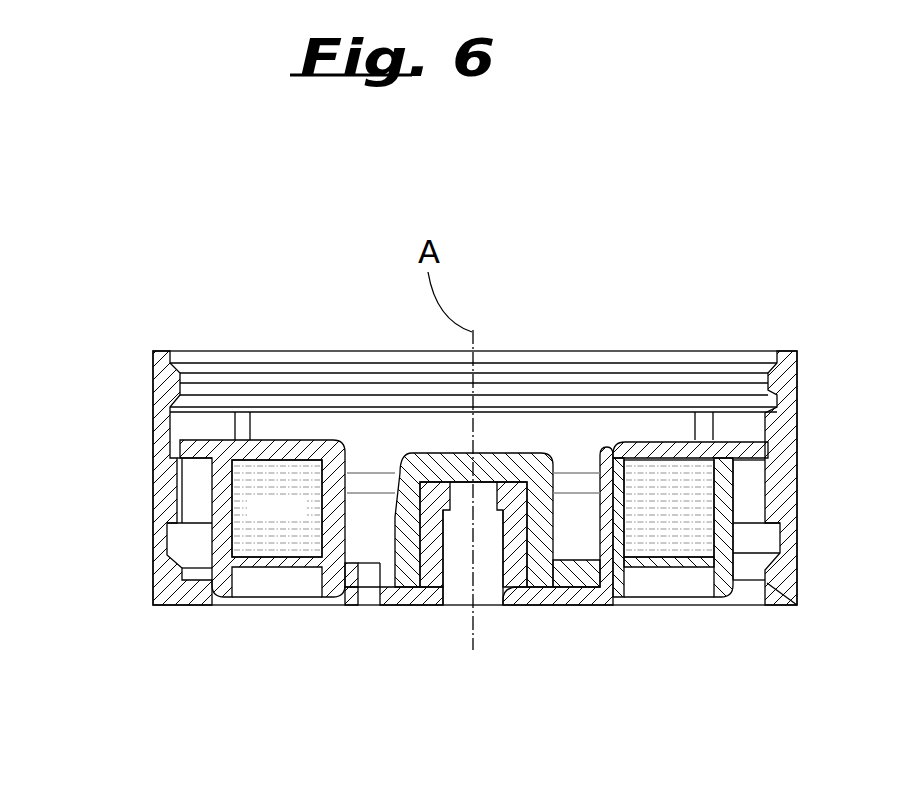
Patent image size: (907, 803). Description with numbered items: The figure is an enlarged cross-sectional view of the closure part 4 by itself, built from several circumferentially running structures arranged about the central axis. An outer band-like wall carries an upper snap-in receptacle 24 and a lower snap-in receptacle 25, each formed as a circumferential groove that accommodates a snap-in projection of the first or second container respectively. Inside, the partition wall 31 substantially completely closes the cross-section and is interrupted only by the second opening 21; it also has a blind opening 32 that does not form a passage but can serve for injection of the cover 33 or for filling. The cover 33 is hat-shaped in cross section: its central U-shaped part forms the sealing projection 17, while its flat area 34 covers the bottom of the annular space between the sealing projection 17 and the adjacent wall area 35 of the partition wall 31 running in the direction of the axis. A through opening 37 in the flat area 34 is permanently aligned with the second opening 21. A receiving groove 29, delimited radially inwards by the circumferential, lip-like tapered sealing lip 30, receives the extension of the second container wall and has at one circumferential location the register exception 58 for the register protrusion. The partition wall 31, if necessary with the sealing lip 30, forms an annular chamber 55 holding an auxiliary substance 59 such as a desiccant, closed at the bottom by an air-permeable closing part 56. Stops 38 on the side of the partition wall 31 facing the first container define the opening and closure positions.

The closure part 4 is at (145, 335).
The sealing projection 17 is at (440, 452).
The second opening 21 is at (368, 602).
The upper snap-in receptacle 24 is at (778, 399).
The lower snap-in receptacle 25 is at (782, 542).
The receiving groove 29 is at (750, 483).
The sealing lip 30 is at (724, 570).
The partition wall 31 is at (640, 447).
The blind opening 32 is at (480, 500).
The cover 33 is at (510, 460).
The flat area 34 is at (573, 577).
The wall area 35 is at (612, 520).
The through opening 37 is at (361, 572).
The stop 38 is at (243, 428).
The chamber 55 is at (277, 508).
The closing part 56 is at (246, 570).
The register exception 58 is at (180, 493).
The auxiliary substance 59 is at (242, 479).